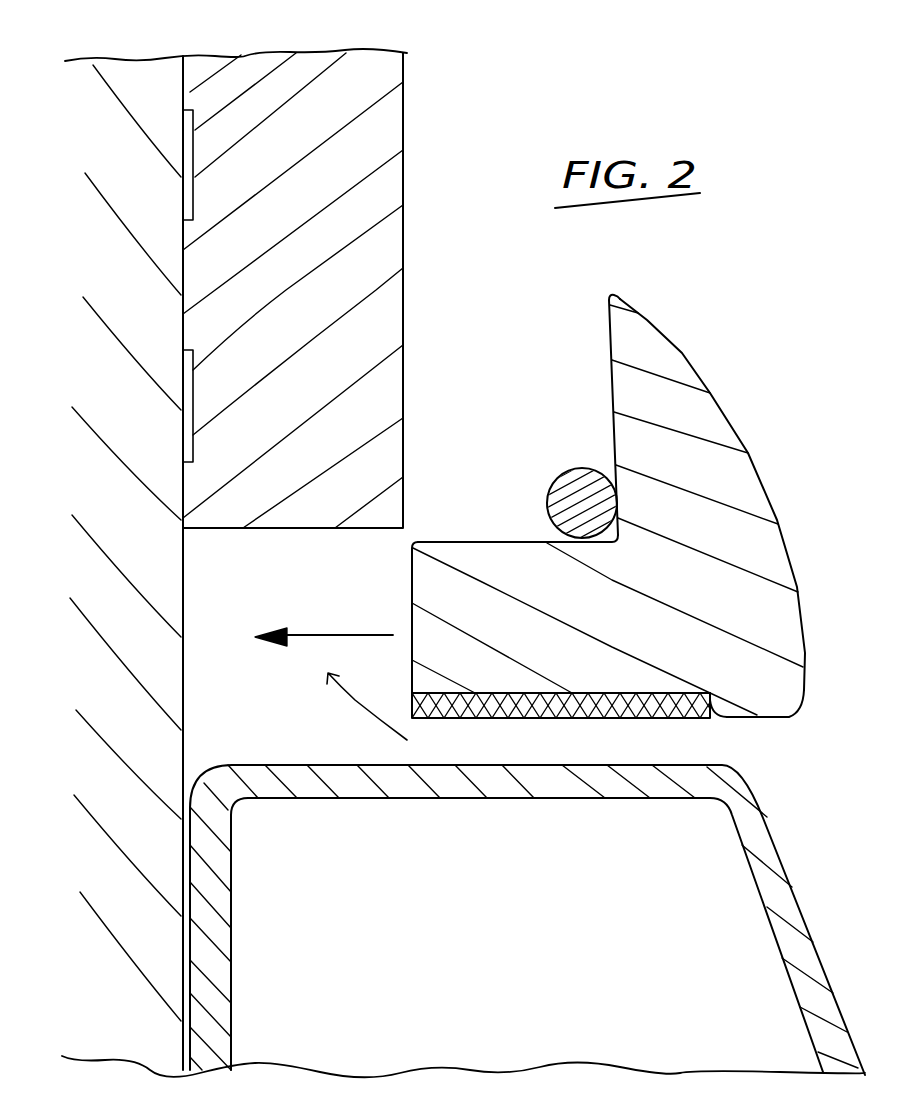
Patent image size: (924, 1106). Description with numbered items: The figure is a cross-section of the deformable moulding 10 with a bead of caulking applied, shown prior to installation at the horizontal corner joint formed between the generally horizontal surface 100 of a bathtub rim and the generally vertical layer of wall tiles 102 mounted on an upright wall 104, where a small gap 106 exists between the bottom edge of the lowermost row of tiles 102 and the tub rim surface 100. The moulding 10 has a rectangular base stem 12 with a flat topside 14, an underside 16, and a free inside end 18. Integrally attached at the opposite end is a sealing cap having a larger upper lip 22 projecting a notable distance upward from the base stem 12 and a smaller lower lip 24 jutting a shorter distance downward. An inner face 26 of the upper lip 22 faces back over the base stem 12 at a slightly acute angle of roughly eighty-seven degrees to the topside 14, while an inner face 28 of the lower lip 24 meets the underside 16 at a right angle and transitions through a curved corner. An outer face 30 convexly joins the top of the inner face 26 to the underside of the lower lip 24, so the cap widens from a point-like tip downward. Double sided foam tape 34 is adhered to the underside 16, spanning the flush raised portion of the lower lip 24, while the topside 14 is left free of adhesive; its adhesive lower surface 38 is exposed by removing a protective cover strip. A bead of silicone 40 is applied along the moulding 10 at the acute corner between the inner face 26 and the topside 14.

The moulding 10 is at (690, 297).
The base stem 12 is at (465, 557).
The topside 14 is at (500, 542).
The underside 16 is at (503, 719).
The free inside end 18 is at (411, 587).
The upper lip 22 is at (667, 366).
The lower lip 24 is at (776, 710).
The inner face of the upper lip 26 is at (609, 388).
The inner face of the lower lip 28 is at (706, 700).
The outer face of the cap 30 is at (740, 428).
The double sided foam tape 34 is at (570, 719).
The lower surface of the tape 38 is at (633, 718).
The bead of silicone 40 is at (565, 490).
The horizontal surface of a bathtub rim 100 is at (343, 778).
The wall tiles 102 is at (404, 183).
The upright wall 104 is at (160, 87).
The gap 106 is at (386, 716).